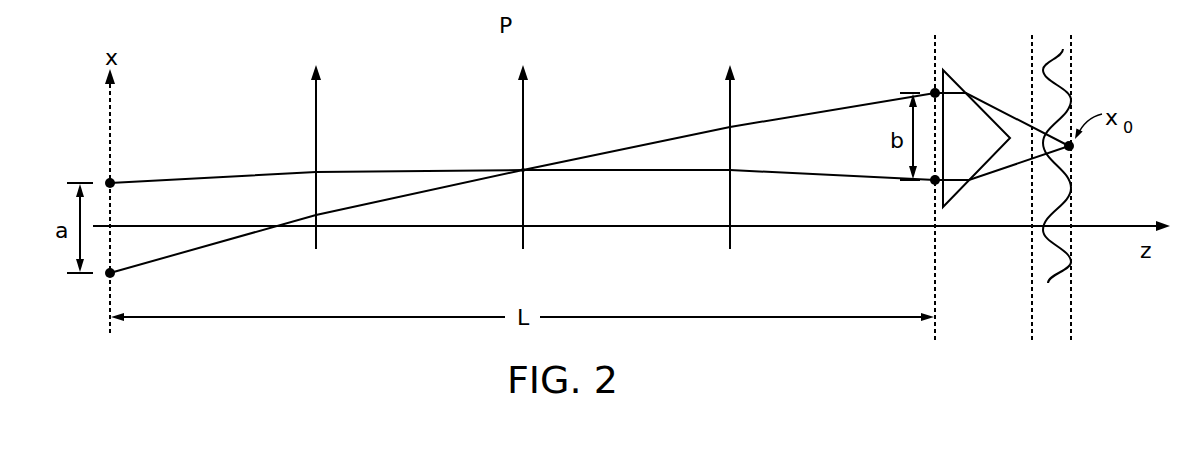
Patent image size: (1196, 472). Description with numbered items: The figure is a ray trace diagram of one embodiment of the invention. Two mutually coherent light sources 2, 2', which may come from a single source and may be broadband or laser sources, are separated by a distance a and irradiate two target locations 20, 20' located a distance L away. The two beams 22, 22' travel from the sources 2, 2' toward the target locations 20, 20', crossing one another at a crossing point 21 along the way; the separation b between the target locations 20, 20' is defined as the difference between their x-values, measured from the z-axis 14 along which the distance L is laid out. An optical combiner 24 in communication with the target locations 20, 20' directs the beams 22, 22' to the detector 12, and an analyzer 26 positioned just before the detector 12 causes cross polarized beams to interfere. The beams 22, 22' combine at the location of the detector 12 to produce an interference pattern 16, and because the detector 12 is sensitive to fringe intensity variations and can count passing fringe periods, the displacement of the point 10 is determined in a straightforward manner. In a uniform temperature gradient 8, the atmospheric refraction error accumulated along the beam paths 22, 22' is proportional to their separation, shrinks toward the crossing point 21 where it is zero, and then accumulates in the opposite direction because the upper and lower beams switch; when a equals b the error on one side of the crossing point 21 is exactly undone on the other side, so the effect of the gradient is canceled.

The light source 2 is at (97, 165).
The light source 2' is at (96, 293).
The uniform temperature gradient 8 is at (315, 108).
The point 10 is at (1076, 146).
The detector 12 is at (1074, 293).
The optical axis 14 is at (1115, 222).
The interference pattern 16 is at (1052, 53).
The target location 20 is at (910, 80).
The target location 20' is at (907, 199).
The crossing point 21 is at (521, 168).
The beam 22 is at (589, 155).
The beam 22' is at (589, 195).
The optical combiner 24 is at (973, 110).
The analyzer 26 is at (1031, 197).